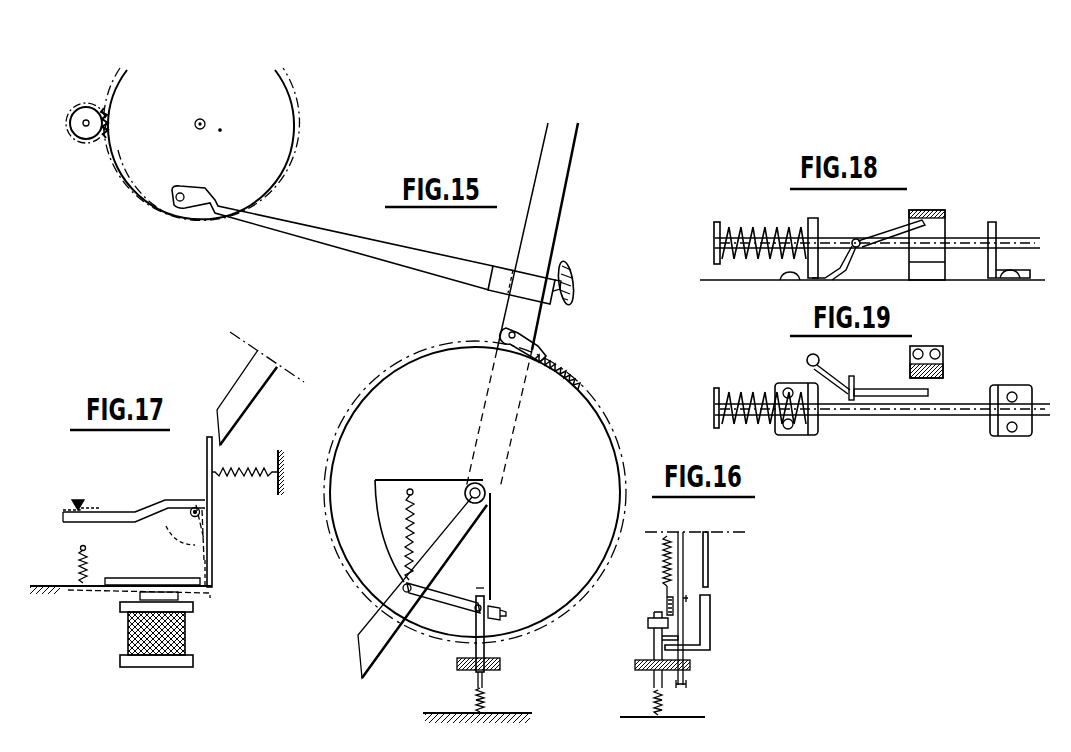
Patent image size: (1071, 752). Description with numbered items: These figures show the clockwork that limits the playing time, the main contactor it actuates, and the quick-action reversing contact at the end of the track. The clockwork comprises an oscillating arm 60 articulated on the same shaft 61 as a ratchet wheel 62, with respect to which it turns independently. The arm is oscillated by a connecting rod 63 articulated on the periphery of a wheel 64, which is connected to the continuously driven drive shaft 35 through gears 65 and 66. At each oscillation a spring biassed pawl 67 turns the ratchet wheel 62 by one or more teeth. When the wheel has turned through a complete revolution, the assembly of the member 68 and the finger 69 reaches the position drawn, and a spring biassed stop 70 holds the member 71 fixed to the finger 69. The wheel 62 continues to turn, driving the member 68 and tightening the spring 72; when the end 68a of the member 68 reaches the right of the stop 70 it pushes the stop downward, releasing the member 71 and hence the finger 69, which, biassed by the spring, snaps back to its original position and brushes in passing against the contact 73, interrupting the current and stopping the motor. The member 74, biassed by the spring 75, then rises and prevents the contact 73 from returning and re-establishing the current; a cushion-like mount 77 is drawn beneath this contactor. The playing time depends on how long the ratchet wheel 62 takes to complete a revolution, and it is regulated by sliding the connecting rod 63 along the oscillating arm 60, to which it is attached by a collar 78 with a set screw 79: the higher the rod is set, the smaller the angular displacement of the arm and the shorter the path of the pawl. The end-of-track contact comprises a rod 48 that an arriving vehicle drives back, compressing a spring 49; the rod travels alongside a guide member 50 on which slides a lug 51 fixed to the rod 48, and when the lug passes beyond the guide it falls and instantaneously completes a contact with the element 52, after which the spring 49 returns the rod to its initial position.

In FIG. 15, the shaft 35 is at (82, 123).
In FIG. 15, the wheel 64 is at (268, 146).
In FIG. 15, the gear 66 is at (94, 138).
In FIG. 15, the gear 65 is at (124, 182).
In FIG. 15, the connecting rod 63 is at (312, 230).
In FIG. 15, the oscillating arm 60 is at (543, 190).
In FIG. 15, the collar 78 is at (506, 263).
In FIG. 15, the set screw 79 is at (570, 266).
In FIG. 15, the spring biassed pawl 67 is at (540, 346).
In FIG. 15, the ratchet wheel 62 is at (588, 468).
In FIG. 15, the shaft 61 is at (485, 490).
In FIG. 15, the member 68 is at (390, 519).
In FIG. 16, the member 68 is at (708, 563).
In FIG. 15, the spring 72 is at (404, 546).
In FIG. 15, the finger 69 is at (366, 650).
In FIG. 17, the finger 69 is at (240, 396).
In FIG. 16, the finger 69 is at (683, 578).
In FIG. 15, the end of the member 68a is at (476, 589).
In FIG. 15, the member 71 is at (498, 614).
In FIG. 16, the member 71 is at (668, 623).
In FIG. 15, the spring biassed stop 70 is at (482, 652).
In FIG. 16, the spring biassed stop 70 is at (704, 617).
In FIG. 17, the contact 73 is at (205, 482).
In FIG. 17, the member 74 is at (190, 580).
In FIG. 17, the spring 75 is at (78, 566).
In FIG. 17, the cushion 77 is at (140, 636).
In FIG. 18, the rod 48 is at (830, 238).
In FIG. 19, the rod 48 is at (825, 406).
In FIG. 18, the spring 49 is at (734, 228).
In FIG. 19, the spring 49 is at (750, 418).
In FIG. 18, the lug 51 is at (858, 240).
In FIG. 19, the lug 51 is at (853, 400).
In FIG. 18, the guide member 50 is at (905, 232).
In FIG. 19, the guide member 50 is at (905, 396).
In FIG. 18, the element 52 is at (933, 222).
In FIG. 19, the element 52 is at (930, 370).